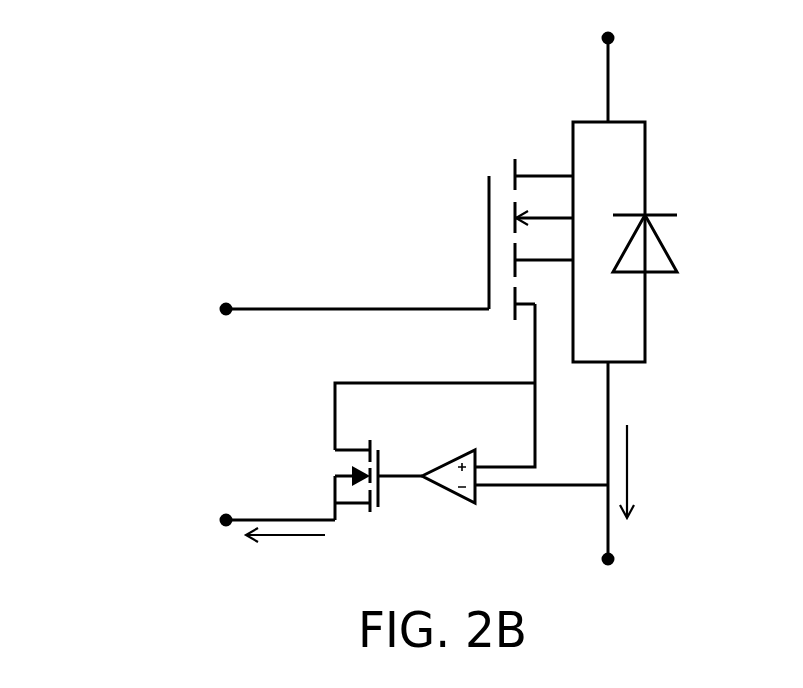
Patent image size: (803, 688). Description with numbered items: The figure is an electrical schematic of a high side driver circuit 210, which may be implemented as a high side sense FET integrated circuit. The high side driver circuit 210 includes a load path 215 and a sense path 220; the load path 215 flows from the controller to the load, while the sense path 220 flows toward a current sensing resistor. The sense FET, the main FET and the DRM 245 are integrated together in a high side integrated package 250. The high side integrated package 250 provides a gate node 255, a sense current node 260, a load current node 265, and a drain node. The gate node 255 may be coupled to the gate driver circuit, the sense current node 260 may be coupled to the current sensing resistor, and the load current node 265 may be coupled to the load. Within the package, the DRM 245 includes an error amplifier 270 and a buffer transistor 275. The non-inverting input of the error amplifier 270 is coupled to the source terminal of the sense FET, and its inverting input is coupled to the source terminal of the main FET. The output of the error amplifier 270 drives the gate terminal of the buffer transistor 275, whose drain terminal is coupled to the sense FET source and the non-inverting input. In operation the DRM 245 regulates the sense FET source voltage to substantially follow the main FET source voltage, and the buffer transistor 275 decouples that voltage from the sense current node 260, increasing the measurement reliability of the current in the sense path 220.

The high side driver circuit 210 is at (146, 110).
The high side integrated package 250 is at (417, 129).
The gate node 255 is at (350, 292).
The DRM 245 is at (325, 385).
The error amplifier 270 is at (464, 450).
The buffer transistor 275 is at (380, 463).
The sense current node 260 is at (268, 500).
The sense path 220 is at (285, 549).
The load path 215 is at (645, 471).
The load current node 265 is at (635, 467).